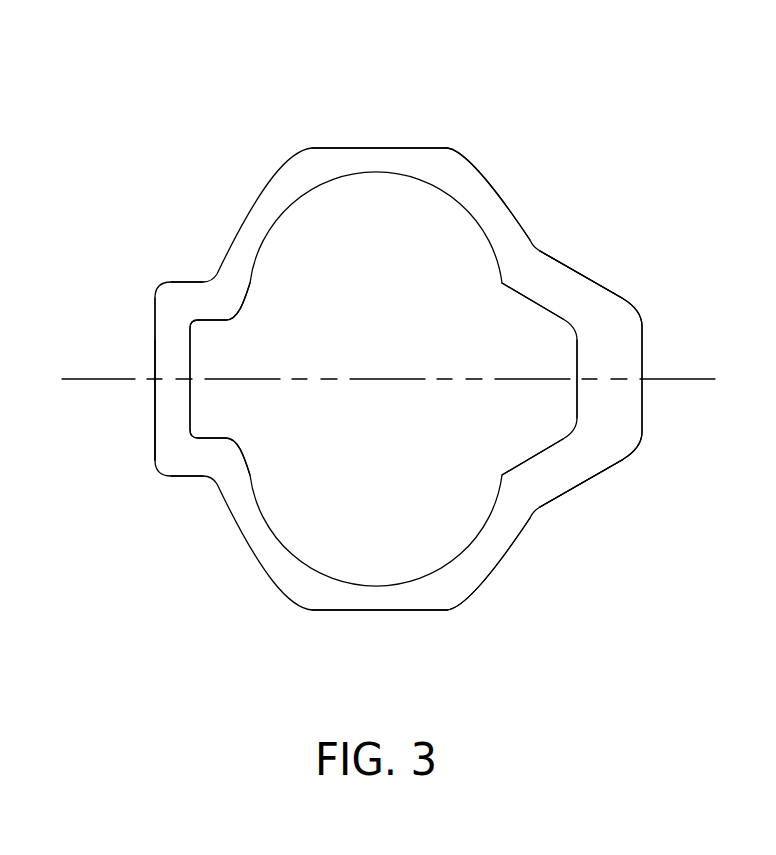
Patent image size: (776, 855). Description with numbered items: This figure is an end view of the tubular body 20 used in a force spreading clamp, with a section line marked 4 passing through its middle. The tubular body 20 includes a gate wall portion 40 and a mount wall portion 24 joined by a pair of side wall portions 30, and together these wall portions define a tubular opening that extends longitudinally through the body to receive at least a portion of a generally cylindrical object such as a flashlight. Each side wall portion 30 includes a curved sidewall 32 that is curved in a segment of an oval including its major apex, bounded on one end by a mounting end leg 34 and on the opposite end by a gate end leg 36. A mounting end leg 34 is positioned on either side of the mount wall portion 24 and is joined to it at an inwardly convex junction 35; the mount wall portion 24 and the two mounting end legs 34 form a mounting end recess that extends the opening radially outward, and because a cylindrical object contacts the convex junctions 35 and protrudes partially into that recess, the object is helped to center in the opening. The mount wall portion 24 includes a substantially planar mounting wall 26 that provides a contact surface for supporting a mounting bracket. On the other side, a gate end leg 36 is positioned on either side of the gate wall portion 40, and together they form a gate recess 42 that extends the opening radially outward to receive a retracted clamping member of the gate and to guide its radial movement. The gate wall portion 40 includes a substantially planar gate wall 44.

The tubular body 20 is at (382, 95).
The mount wall portion 24 is at (142, 428).
The mounting wall 26 is at (168, 340).
The side wall portions 30 is at (470, 147).
The curved sidewall 32 is at (485, 199).
The mounting end leg 34 is at (200, 292).
The inwardly convex junction 35 is at (232, 312).
The gate end leg 36 is at (560, 278).
The gate wall portion 40 is at (622, 472).
The gate recess 42 is at (552, 337).
The gate wall 44 is at (620, 345).
The section line 4- 4 is at (62, 379).